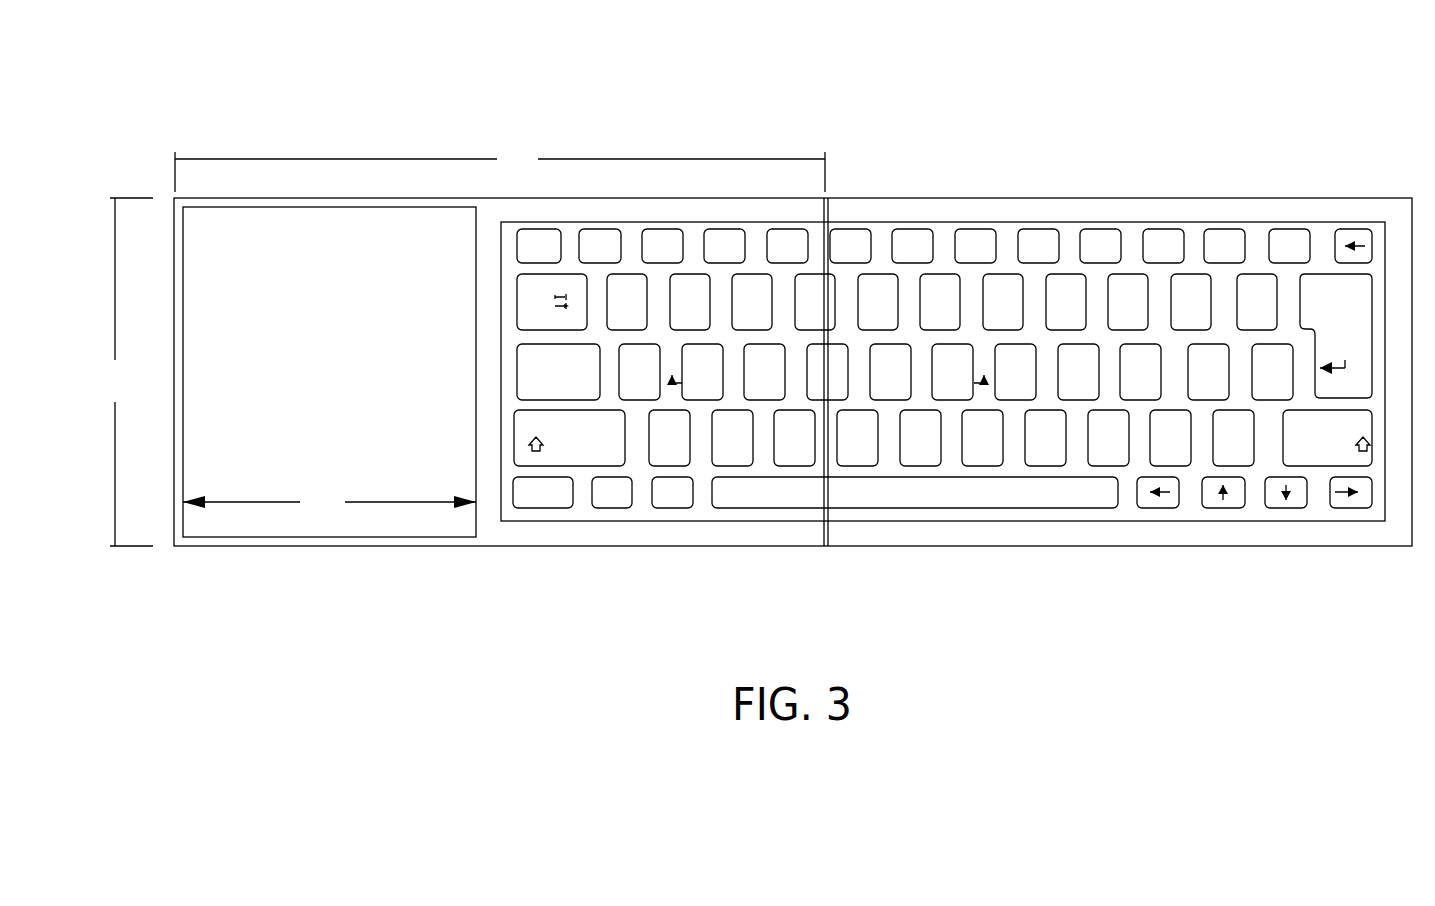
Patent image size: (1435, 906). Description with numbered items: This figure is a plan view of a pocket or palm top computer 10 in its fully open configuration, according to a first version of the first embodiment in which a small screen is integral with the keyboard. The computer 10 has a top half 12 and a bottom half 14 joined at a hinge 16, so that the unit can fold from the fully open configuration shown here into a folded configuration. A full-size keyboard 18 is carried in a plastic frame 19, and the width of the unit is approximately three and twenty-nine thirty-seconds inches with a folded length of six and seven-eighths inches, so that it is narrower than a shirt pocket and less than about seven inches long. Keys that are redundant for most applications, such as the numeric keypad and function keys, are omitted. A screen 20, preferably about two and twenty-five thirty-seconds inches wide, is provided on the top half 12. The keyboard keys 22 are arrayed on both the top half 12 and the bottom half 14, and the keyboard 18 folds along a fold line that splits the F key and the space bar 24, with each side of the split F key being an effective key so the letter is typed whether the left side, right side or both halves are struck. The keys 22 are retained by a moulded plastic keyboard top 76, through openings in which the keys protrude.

The pocket computer 10 is at (296, 118).
The top half 12 is at (693, 546).
The bottom half 14 is at (1085, 538).
The hinge 16 is at (823, 548).
The keyboard 18 is at (1003, 236).
The plastic frame 19 is at (585, 537).
The screen 20 is at (339, 387).
The keyboard keys 22 is at (1125, 278).
The space bar 24 is at (917, 496).
The keyboard top 76 is at (1130, 506).